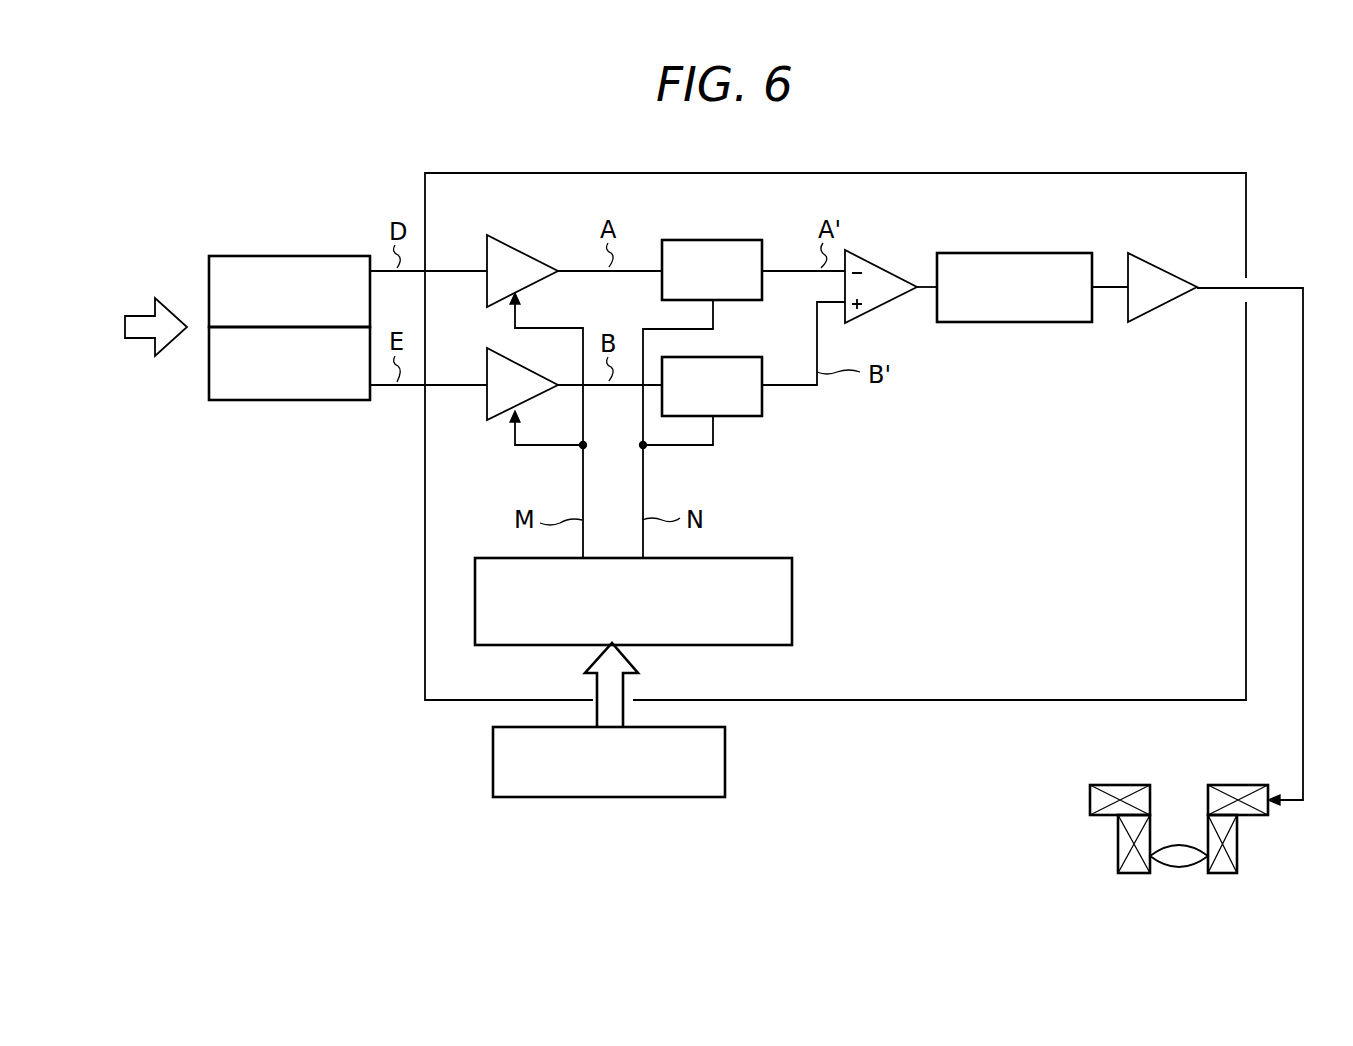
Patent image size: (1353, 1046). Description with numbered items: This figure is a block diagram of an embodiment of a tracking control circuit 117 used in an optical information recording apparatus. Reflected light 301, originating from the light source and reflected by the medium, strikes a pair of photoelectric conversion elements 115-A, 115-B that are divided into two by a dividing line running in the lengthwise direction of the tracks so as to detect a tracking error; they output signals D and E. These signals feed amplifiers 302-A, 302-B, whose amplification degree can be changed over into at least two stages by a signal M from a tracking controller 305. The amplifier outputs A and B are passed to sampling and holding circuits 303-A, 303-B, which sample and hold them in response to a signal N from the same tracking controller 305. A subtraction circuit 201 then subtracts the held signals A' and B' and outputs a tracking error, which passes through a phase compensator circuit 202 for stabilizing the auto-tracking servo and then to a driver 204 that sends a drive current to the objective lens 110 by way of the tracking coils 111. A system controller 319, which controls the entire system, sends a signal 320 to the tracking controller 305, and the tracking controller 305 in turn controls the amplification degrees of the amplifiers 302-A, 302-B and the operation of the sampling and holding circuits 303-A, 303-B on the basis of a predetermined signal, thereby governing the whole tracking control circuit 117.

The tracking control circuit 117 is at (1250, 250).
The reflected light 301 is at (137, 341).
The photoelectric conversion element 115-A is at (256, 254).
The photoelectric conversion element 115-B is at (250, 402).
The amplifier 302-A is at (509, 245).
The amplifier 302-B is at (492, 420).
The sampling and holding circuit 303-A is at (733, 240).
The sampling and holding circuit 303-B is at (733, 358).
The subtraction circuit 201 is at (882, 263).
The phase compensator circuit 202 is at (1033, 253).
The driver 204 is at (1158, 265).
The tracking controller 305 is at (792, 622).
The signal 320 is at (625, 686).
The system controller 319 is at (725, 788).
The tracking actuator coils 111 is at (1234, 785).
The objective lens 110 is at (1177, 873).